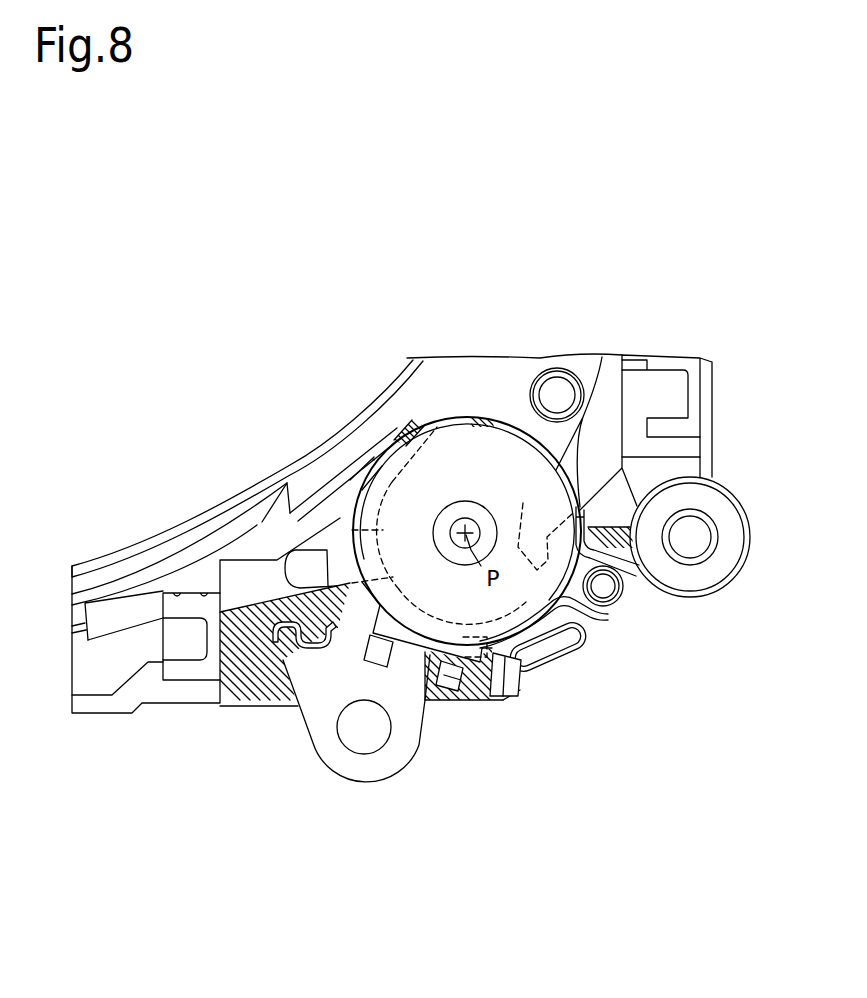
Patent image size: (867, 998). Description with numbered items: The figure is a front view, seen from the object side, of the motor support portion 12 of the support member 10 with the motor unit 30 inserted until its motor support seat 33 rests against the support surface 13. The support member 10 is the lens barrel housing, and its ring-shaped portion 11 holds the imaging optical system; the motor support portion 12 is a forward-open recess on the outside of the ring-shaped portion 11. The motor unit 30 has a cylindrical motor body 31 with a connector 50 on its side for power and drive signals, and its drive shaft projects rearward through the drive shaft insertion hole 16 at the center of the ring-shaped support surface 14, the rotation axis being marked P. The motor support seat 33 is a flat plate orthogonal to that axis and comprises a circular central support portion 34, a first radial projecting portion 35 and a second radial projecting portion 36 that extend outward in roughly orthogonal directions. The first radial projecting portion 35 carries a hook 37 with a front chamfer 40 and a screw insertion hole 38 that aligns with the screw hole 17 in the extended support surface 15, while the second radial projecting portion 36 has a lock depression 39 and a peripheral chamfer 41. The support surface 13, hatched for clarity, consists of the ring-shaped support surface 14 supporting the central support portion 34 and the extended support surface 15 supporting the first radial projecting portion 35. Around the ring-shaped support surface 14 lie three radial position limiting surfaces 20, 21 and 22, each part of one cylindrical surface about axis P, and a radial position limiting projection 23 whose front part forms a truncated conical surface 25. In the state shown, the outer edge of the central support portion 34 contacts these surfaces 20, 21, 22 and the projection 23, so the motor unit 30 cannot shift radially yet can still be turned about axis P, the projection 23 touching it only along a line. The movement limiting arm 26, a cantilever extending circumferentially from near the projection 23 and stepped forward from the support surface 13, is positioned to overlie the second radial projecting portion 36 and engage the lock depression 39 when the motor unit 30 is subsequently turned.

The support member 10 is at (131, 566).
The ring-shaped portion 11 is at (237, 516).
The motor support portion 12 is at (597, 708).
The support surface 13 is at (345, 530).
The ring-shaped support surface 14 is at (488, 521).
The extended support surface 15 is at (400, 705).
The drive shaft insertion hole 16 is at (520, 520).
The screw hole 17 is at (275, 710).
The radial position limiting surface 20 is at (360, 494).
The radial position limiting surface 21 is at (407, 423).
The radial position limiting surface 22 is at (602, 360).
The radial position limiting projection 23 is at (497, 700).
The truncated conical surface 25 is at (463, 700).
The movement limiting arm 26 is at (543, 667).
The motor unit 30 is at (500, 418).
The motor body 31 is at (476, 448).
The motor support seat 33 is at (411, 772).
The central support portion 34 is at (367, 417).
The first radial projecting portion 35 is at (323, 745).
The second radial projecting portion 36 is at (618, 603).
The hook 37 is at (290, 650).
The screw insertion hole 38 is at (355, 742).
The lock depression 39 is at (613, 589).
The chamfer 40 is at (268, 603).
The chamfer 41 is at (600, 620).
The connector 50 is at (450, 688).